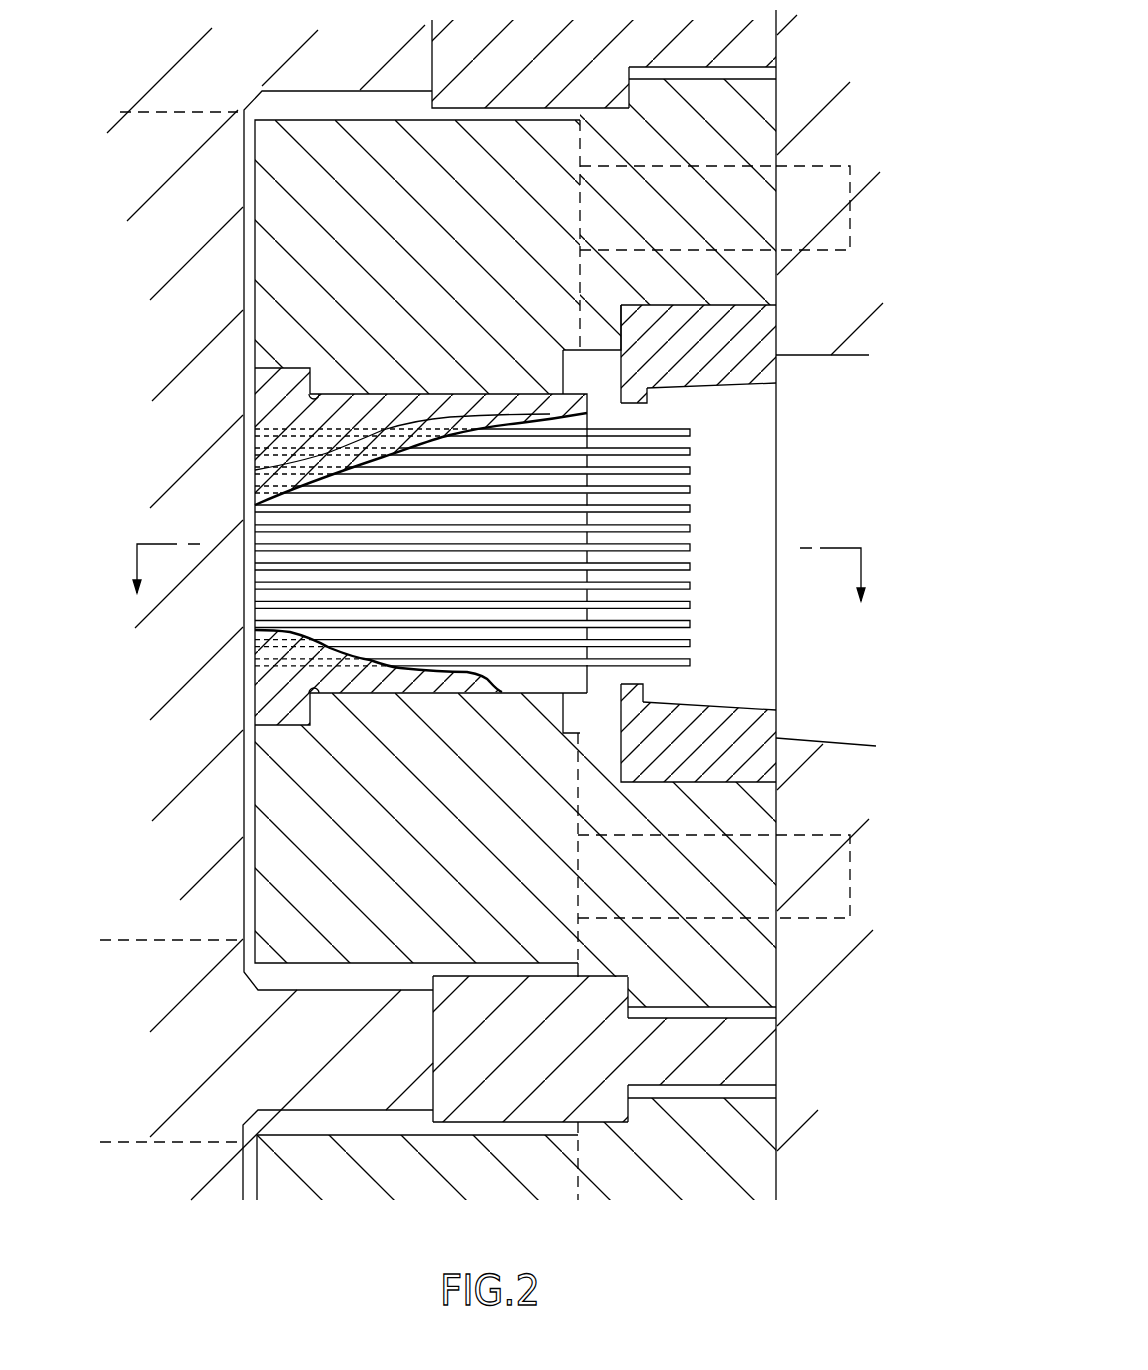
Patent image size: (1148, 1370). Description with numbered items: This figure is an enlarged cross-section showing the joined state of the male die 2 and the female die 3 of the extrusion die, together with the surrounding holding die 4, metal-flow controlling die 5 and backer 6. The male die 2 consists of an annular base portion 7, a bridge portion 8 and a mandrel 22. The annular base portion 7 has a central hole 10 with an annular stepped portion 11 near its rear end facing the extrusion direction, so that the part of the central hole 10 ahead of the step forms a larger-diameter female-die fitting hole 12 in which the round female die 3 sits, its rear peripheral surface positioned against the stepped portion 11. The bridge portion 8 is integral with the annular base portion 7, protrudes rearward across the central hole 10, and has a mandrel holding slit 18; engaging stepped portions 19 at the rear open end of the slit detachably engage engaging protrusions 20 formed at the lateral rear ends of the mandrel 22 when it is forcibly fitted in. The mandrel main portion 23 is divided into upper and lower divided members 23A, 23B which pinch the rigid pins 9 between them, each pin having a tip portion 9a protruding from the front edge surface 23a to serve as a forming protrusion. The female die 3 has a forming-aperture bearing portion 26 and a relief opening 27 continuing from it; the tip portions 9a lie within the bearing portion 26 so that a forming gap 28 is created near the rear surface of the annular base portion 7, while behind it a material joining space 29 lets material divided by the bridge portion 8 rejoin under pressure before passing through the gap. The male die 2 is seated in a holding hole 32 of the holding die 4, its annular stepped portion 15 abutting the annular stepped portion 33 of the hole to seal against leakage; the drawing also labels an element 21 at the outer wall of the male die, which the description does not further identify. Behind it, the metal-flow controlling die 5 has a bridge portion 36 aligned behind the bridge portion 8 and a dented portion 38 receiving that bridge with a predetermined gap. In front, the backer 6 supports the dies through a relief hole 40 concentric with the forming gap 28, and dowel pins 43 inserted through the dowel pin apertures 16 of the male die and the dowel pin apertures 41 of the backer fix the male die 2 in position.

The male die 2 is at (333, 793).
The female die 3 is at (828, 672).
The holding die 4 is at (542, 85).
The metal-flow controlling die 5 is at (348, 73).
The backer 6 is at (797, 52).
The annular base portion 7 is at (757, 972).
The bridge portion 8 is at (303, 758).
The rigid pins 9 is at (538, 561).
The tip portion 9a is at (653, 547).
The central hole 10 is at (570, 345).
The annular stepped portion 11 is at (630, 340).
The female-die fitting hole 12 is at (697, 327).
The annular stepped portion 15 is at (626, 80).
The dowel pin insertion apertures 16 is at (690, 185).
The mandrel holding slit 18 is at (435, 405).
The engaging stepped portions 19 is at (280, 377).
The engaging protrusions 20 is at (293, 388).
The shell 21 is at (297, 118).
The mandrel 22 is at (423, 695).
The mandrel main portion 23 is at (327, 436).
The upper divided member 23A is at (313, 420).
The lower divided member 23B is at (287, 467).
The front edge surface 23a is at (590, 677).
The forming-aperture bearing portion 26 is at (637, 690).
The relief opening 27 is at (728, 703).
The forming gap 28 is at (633, 417).
The material joining space 29 is at (573, 702).
The holding holes 32 is at (680, 87).
The annular stepped portion 33 is at (632, 100).
The bridge portion 36 is at (157, 140).
The dented portions 38 is at (272, 258).
The relief holes 40 is at (804, 372).
The dowel pin apertures 41 is at (815, 187).
The dowel pins 43 is at (733, 176).